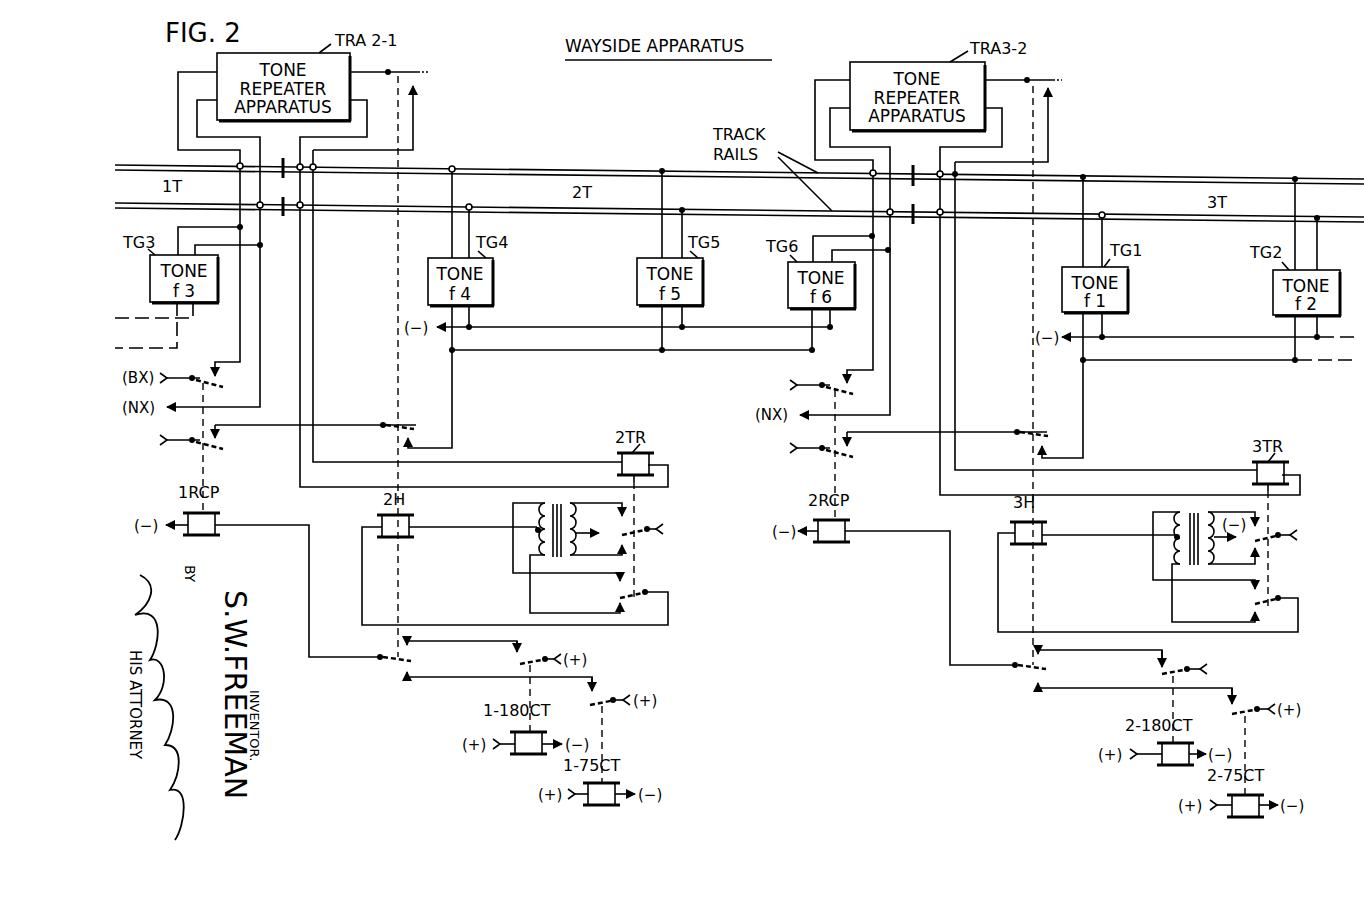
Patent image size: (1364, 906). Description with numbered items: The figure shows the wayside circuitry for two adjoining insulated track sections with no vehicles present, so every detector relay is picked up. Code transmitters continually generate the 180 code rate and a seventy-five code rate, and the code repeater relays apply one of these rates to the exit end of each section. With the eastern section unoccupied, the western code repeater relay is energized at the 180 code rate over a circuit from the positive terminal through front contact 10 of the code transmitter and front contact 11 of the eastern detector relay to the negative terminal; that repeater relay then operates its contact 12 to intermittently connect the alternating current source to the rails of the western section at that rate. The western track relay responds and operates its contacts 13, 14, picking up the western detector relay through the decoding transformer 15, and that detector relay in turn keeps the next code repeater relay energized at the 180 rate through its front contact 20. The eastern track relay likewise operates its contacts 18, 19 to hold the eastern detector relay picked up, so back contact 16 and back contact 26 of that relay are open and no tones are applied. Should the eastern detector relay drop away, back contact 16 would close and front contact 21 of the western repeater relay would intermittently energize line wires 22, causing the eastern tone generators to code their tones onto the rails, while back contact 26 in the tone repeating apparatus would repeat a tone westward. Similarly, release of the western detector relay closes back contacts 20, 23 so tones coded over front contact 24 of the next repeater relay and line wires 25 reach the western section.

The front contact of code transmitter 2-180CT 10 is at (1170, 670).
The contact of track detector relay 3H 11 is at (1022, 670).
The contact of code repeater relay 2RCP 12 is at (840, 384).
The contact of track relay 2TR 13 is at (632, 526).
The contact of track relay 2TR 14 is at (628, 590).
The decoding transformer 15 is at (558, 558).
The back contact of detector relay 3H 16 is at (1035, 434).
The contact of track relay 3TR 18 is at (1266, 531).
The contact of track relay 3TR 19 is at (1266, 596).
The contact of detector relay 2H 20 is at (386, 660).
The front contact of relay 2RCP 21 is at (850, 457).
The line wires 22 is at (1217, 350).
The back contact of detector relay 2H 23 is at (400, 426).
The front contact of relay 1RCP 24 is at (220, 450).
The line wires 25 is at (630, 341).
The back contact of relay 3H 26 is at (1038, 78).
The 180 code rate 180 is at (176, 155).